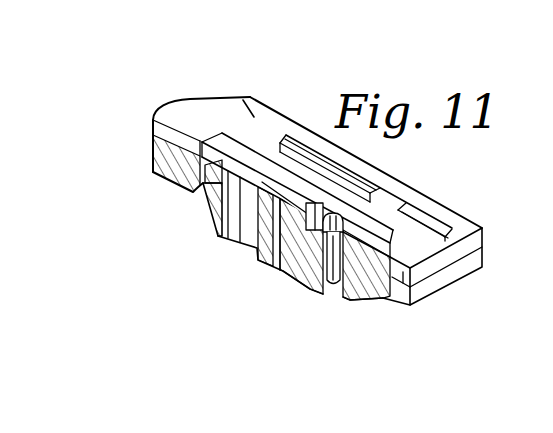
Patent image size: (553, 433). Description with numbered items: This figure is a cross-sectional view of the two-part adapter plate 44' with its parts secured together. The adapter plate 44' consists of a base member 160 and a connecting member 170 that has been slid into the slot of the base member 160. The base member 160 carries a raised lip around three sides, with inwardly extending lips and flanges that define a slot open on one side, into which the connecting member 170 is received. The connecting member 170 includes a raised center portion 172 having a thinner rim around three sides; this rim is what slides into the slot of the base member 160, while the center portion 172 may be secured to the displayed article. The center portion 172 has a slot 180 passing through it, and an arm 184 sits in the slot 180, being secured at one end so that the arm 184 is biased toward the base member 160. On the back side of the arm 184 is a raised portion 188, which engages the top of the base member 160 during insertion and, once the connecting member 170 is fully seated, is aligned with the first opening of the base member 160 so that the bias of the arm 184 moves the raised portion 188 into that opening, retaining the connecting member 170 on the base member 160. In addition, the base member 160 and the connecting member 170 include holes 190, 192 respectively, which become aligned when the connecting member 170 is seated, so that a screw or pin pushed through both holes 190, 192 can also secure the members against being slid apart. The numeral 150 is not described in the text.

The connecting member 170 is at (186, 107).
The slot 180 is at (260, 165).
The arm 184 is at (297, 150).
The hole 192 is at (374, 186).
The raised center portion 172 is at (366, 169).
The base member 160 is at (437, 247).
The raised portion 188 is at (209, 243).
The sectioned body 150 is at (296, 273).
The hole 190 is at (312, 296).
The two-part adapter plate 44' is at (348, 358).